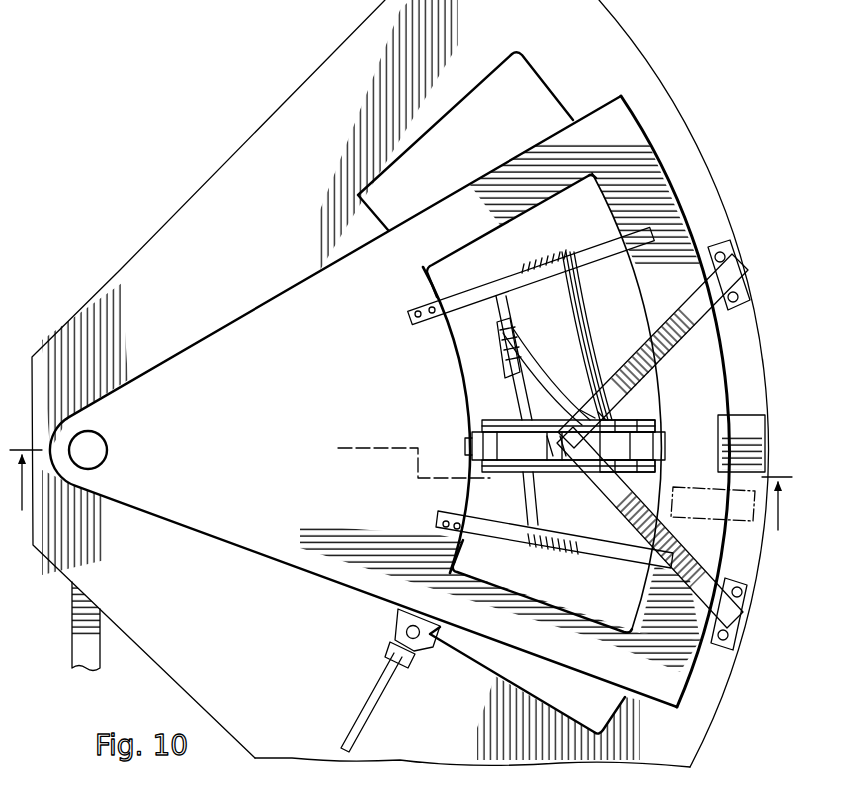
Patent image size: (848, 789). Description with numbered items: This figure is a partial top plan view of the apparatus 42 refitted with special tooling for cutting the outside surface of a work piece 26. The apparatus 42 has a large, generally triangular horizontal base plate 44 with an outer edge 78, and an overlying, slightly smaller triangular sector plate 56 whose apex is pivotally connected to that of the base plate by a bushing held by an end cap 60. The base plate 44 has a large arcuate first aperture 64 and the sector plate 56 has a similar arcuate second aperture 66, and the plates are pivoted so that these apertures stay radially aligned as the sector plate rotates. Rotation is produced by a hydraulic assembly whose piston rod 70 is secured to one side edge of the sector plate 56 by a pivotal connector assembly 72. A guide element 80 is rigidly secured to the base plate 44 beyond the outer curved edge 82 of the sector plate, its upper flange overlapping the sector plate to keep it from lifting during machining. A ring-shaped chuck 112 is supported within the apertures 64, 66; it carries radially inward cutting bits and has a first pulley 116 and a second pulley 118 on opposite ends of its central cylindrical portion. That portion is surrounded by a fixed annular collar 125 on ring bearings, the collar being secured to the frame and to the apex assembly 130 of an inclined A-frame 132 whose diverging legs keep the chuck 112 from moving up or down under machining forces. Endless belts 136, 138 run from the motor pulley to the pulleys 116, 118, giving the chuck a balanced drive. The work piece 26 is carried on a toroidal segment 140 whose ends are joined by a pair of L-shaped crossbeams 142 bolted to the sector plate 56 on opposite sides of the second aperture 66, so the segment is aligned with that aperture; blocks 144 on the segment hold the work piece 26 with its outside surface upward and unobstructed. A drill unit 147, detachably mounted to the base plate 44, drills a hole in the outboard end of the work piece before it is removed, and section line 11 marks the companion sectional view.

The section line 11 is at (402, 510).
The work piece 26 is at (532, 388).
The apparatus 42 is at (199, 186).
The base plate 44 is at (303, 740).
The sector plate 56 is at (291, 284).
The end cap 60 is at (107, 445).
The first aperture 64 is at (462, 100).
The second aperture 66 is at (538, 200).
The piston rod 70 is at (388, 676).
The pivotal connector assembly 72 is at (398, 622).
The outer edge 78 is at (717, 685).
The guide element 80 is at (748, 432).
The outer curved edge 82 is at (672, 181).
The ring-shaped chuck 112 is at (469, 430).
The first pulley 116 is at (513, 473).
The second pulley 118 is at (497, 420).
The annular collar 125 is at (500, 450).
The apex assembly 130 is at (553, 455).
The A-frame 132 is at (687, 317).
The endless belt 136 is at (655, 467).
The endless belt 138 is at (655, 425).
The toroidal segment 140 is at (588, 320).
The L-shaped crossbeams 142 is at (552, 257).
The blocks 144 is at (510, 370).
The drill unit 147 is at (684, 514).